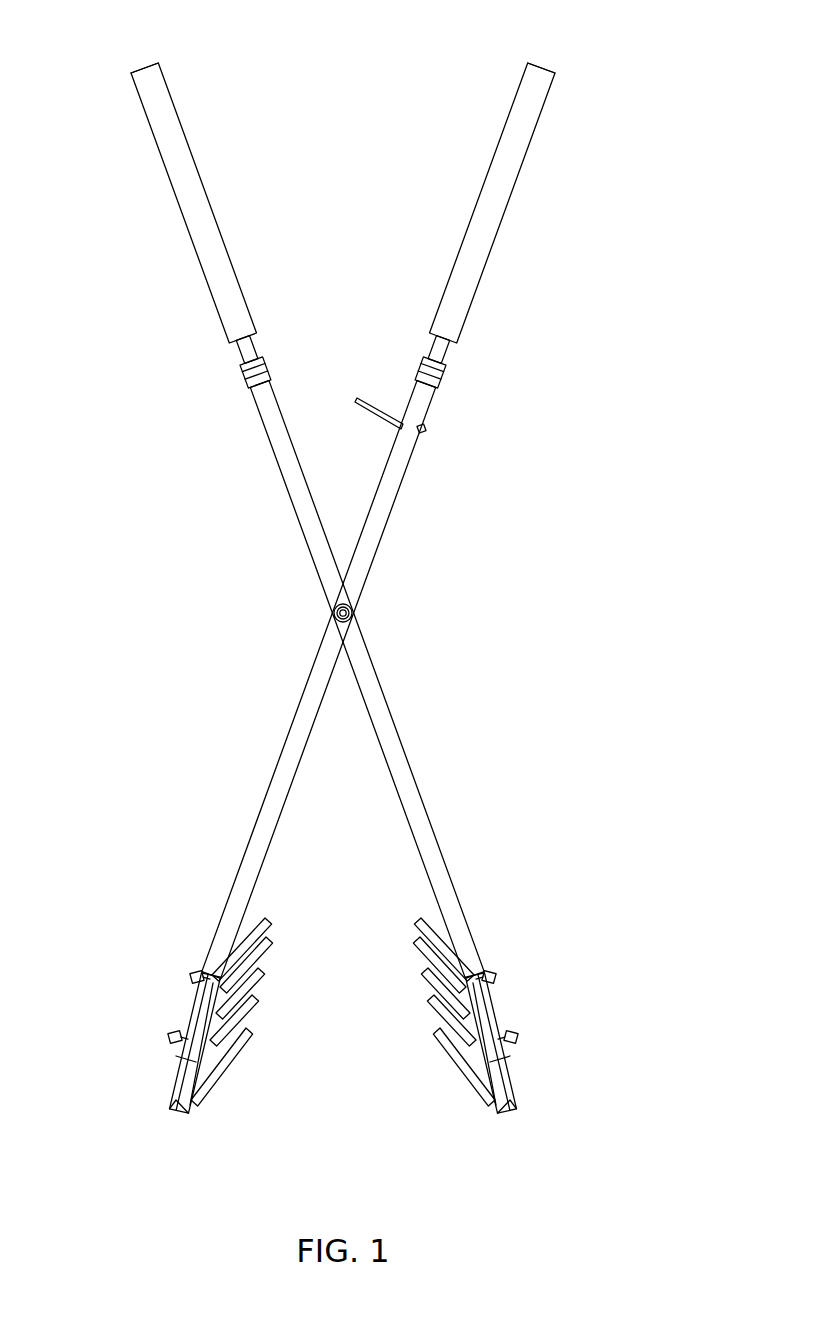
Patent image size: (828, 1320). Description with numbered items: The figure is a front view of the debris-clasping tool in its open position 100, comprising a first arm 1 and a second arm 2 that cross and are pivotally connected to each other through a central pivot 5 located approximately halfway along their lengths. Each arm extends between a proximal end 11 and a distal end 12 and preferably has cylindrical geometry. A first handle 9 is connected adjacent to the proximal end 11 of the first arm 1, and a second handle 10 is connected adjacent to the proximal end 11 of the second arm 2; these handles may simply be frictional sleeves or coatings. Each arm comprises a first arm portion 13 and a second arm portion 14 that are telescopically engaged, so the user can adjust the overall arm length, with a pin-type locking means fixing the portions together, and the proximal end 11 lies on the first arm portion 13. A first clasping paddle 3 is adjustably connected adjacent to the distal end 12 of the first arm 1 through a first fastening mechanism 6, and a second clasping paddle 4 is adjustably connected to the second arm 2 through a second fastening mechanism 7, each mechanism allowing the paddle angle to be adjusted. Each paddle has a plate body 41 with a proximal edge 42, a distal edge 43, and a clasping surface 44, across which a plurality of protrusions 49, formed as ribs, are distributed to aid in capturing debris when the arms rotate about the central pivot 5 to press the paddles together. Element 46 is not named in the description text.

The open position 100 is at (580, 952).
The first arm 1 is at (460, 500).
The second arm 2 is at (222, 500).
The first clasping paddle 3 is at (228, 1018).
The second clasping paddle 4 is at (443, 1011).
The central pivot 5 is at (370, 612).
The first fastening mechanism 6 is at (168, 965).
The second fastening mechanism 7 is at (517, 963).
The first handle 9 is at (512, 183).
The second handle 10 is at (188, 203).
The proximal end 11 is at (120, 50).
The distal end 12 is at (158, 1062).
The first arm portion 13 is at (445, 350).
The second arm portion 14 is at (420, 400).
The plate body 41 is at (205, 1010).
The proximal edge 42 is at (258, 912).
The distal edge 43 is at (188, 1118).
The clasping surface 44 is at (235, 1040).
The side flange 46 is at (262, 957).
The protrusions 49 is at (267, 935).